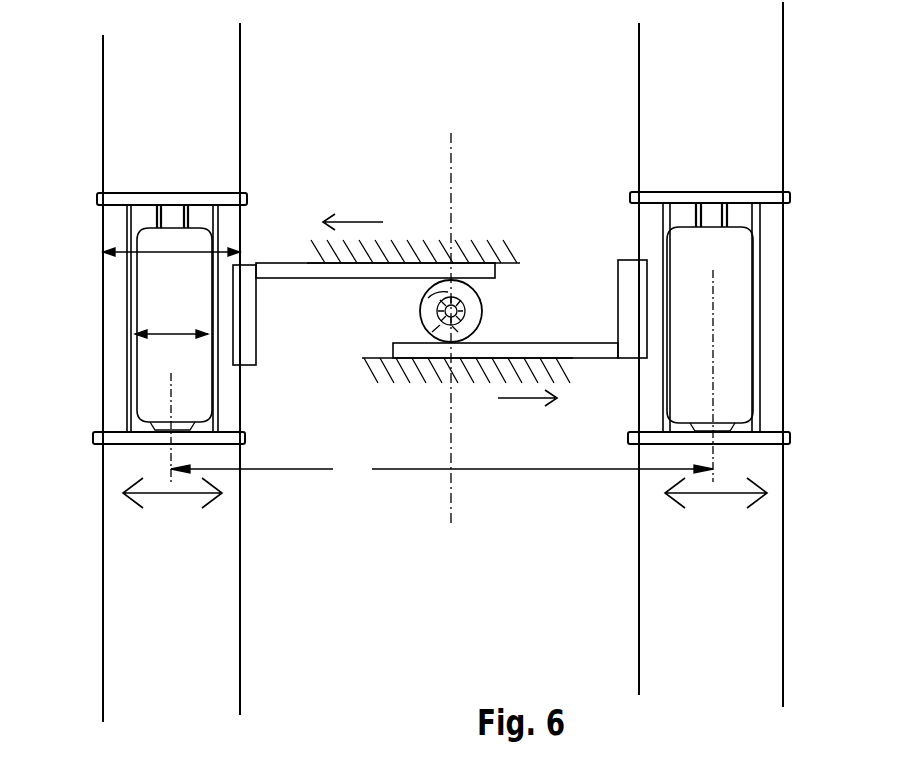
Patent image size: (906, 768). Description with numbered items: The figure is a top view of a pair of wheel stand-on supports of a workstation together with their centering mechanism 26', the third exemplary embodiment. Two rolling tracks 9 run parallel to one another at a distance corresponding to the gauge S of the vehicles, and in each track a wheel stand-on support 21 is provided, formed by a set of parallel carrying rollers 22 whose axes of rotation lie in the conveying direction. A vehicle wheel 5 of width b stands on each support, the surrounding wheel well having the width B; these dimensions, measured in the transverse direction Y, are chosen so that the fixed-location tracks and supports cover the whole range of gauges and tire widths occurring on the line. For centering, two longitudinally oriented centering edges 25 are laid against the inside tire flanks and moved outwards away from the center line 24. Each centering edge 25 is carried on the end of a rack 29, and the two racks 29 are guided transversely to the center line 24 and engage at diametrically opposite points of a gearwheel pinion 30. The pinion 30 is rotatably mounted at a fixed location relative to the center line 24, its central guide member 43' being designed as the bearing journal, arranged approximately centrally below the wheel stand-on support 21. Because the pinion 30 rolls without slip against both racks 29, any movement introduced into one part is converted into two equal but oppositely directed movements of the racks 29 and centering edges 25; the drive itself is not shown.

The wheel 5 is at (193, 390).
The rolling track 9 is at (220, 618).
The wheel stand-on support 21 is at (108, 447).
The carrying roller 22 is at (198, 215).
The center line 24 is at (452, 197).
The centering edge 25 is at (252, 335).
The centering mechanism 26' is at (425, 254).
The rack 29 is at (327, 275).
The gearwheel pinion 30 is at (420, 312).
The central guide member 43' is at (505, 306).
The width of the wheel wells B is at (171, 269).
The wheel width b is at (171, 352).
The gauge S is at (442, 470).
The transverse direction Y is at (445, 516).